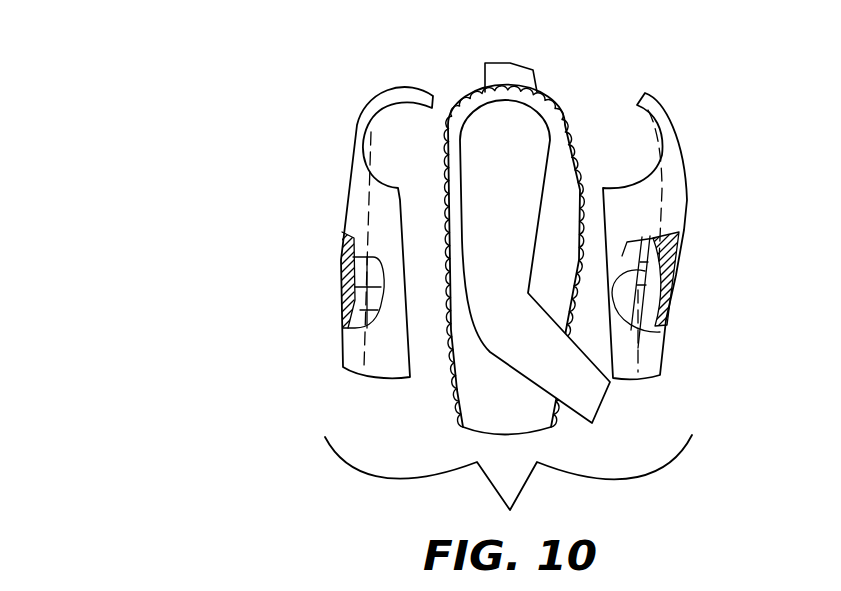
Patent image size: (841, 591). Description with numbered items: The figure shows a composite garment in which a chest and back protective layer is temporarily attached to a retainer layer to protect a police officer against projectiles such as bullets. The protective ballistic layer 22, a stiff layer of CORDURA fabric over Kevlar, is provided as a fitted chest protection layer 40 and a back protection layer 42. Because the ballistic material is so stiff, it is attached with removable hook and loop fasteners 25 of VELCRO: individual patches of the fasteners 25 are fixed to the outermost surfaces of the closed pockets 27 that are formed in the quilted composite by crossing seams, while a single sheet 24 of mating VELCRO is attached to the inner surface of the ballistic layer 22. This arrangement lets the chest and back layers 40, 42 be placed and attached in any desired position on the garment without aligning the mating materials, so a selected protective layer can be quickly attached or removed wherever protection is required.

The protective ballistic layer 22 is at (737, 263).
The sheet of VELCRO 24 is at (348, 333).
The hook and loop fasteners 25 is at (470, 100).
The closed pockets 27 is at (453, 413).
The chest protection layer 40 is at (687, 212).
The back protection layer 42 is at (342, 203).